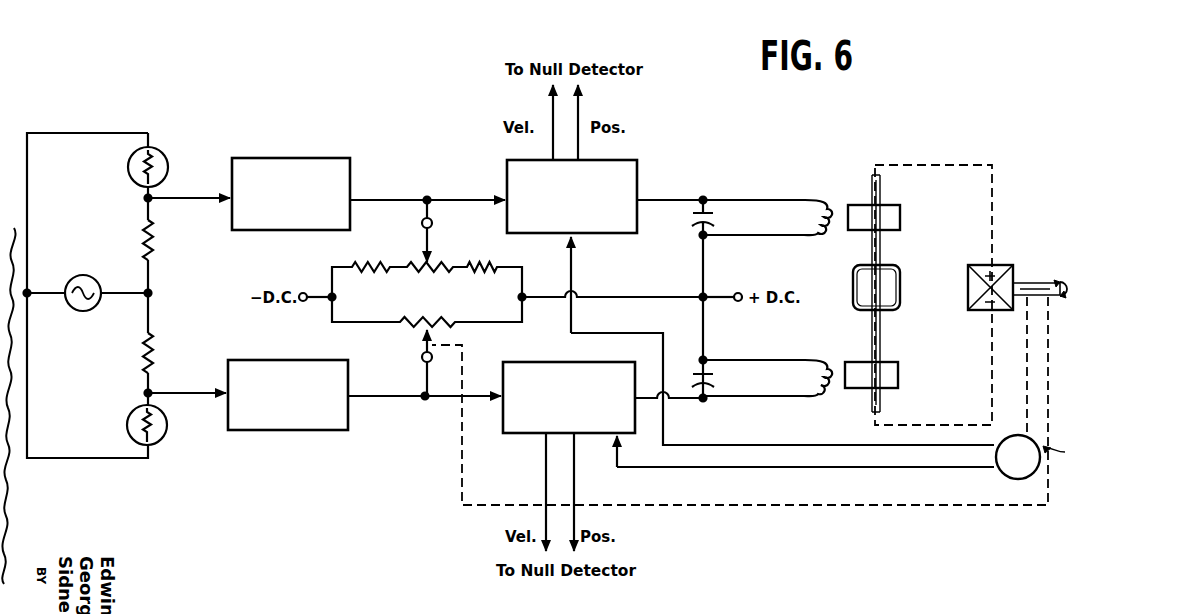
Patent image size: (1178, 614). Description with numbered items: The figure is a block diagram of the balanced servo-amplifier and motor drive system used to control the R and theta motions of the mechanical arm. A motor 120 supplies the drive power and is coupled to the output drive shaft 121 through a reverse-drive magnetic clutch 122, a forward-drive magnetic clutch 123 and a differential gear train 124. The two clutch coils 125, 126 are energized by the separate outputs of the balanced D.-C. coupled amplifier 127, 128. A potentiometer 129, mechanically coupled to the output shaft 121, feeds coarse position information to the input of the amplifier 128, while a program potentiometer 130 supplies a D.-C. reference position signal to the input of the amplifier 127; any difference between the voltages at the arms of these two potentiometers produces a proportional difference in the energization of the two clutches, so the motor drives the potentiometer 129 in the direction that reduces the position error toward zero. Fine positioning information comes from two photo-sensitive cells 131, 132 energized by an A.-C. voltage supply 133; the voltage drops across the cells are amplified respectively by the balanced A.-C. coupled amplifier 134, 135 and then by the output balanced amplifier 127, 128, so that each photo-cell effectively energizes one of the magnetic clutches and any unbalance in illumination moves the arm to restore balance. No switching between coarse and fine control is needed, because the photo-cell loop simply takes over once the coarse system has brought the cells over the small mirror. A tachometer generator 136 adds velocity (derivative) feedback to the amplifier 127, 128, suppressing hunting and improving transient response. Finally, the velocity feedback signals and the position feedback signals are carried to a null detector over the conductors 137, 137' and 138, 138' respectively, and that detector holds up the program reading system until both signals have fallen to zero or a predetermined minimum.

The motor 120 is at (901, 281).
The output drive shaft 121 is at (1038, 283).
The reverse-drive magnetic clutch 122 is at (900, 218).
The forward-drive magnetic clutch 123 is at (898, 372).
The differential gear train 124 is at (1006, 265).
The clutch coil 125 is at (812, 201).
The clutch coil 126 is at (813, 362).
The D.-C. coupled amplifier 127 is at (621, 163).
The D.-C. coupled amplifier 128 is at (526, 433).
The potentiometer 129 is at (421, 334).
The program potentiometer 130 is at (432, 254).
The photo-sensitive cell 131 is at (160, 159).
The photo-sensitive cell 132 is at (162, 435).
The A.-C. voltage supply 133 is at (93, 282).
The A.-C. coupled amplifier 134 is at (261, 362).
The A.-C. coupled amplifier 135 is at (259, 232).
The tachometer generator 136 is at (1012, 478).
The conductor 137 is at (513, 492).
The conductor 138 is at (615, 492).
The conductor 137' is at (525, 122).
The conductor 138' is at (616, 122).